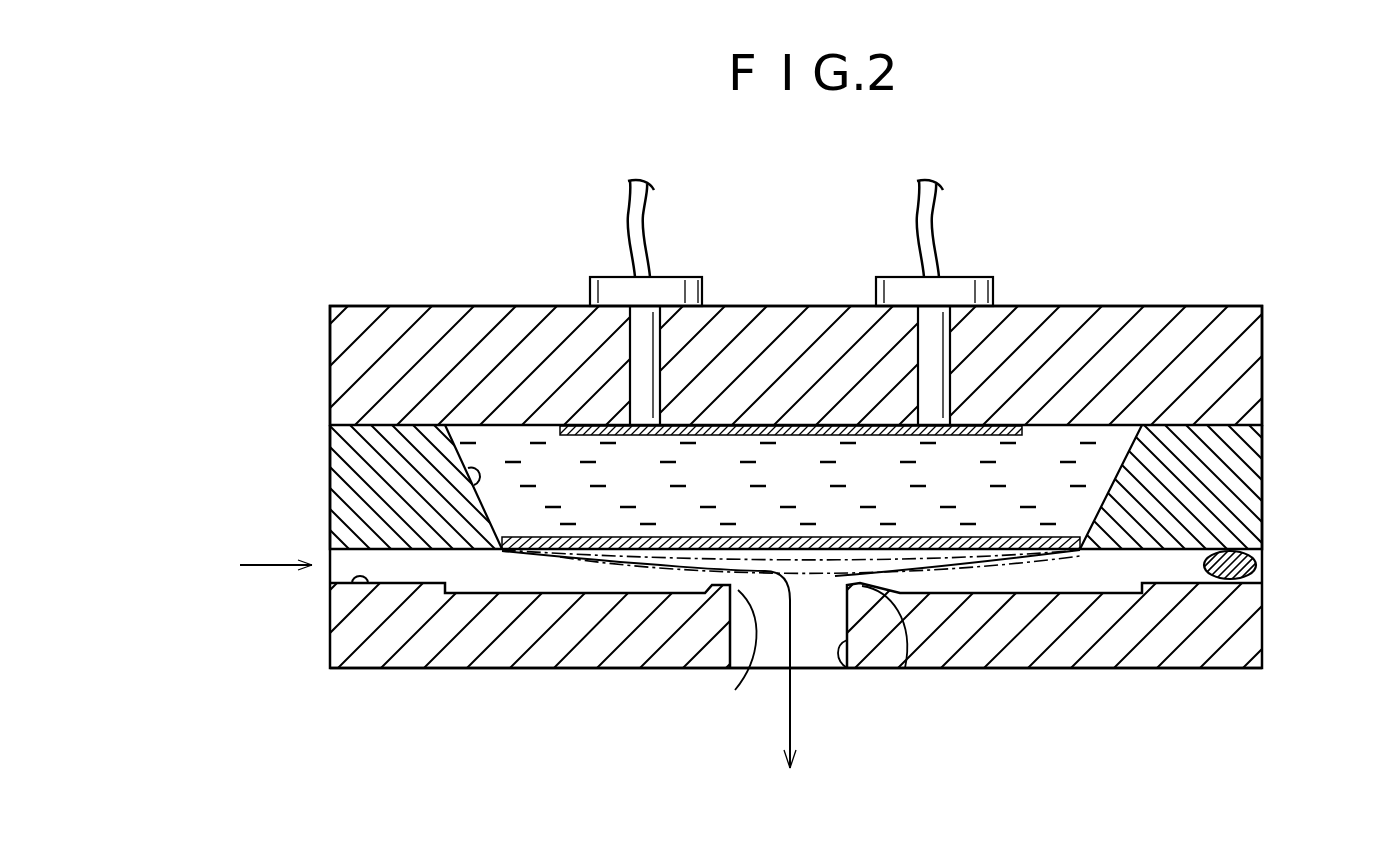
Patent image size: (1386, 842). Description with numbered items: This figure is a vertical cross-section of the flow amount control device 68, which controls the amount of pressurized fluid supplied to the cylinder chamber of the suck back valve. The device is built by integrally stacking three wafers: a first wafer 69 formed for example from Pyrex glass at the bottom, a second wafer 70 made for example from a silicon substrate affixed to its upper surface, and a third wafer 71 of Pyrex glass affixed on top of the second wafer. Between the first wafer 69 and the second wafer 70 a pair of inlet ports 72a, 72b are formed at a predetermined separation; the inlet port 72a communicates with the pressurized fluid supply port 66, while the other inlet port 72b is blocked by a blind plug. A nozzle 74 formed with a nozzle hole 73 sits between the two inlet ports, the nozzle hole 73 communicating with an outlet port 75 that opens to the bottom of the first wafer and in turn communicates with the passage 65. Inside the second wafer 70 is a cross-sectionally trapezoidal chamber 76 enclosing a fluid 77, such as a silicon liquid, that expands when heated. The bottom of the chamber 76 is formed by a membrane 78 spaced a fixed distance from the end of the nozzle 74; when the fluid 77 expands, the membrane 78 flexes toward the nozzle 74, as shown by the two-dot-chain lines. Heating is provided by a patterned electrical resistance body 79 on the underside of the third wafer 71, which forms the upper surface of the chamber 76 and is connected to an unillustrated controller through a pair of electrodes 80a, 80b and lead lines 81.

The passage 65 is at (853, 808).
The pressurized fluid supply port 66 is at (212, 614).
The flow amount control device 68 is at (1212, 295).
The first wafer 69 is at (1160, 650).
The second wafer 70 is at (1262, 487).
The third wafer 71 is at (1262, 377).
The inlet port 72a is at (330, 597).
The inlet port 72b is at (1243, 578).
The nozzle hole 73 is at (735, 680).
The nozzle 74 is at (910, 668).
The outlet port 75 is at (838, 675).
The chamber 76 is at (468, 470).
The fluid 77 is at (1057, 467).
The membrane 78 is at (790, 545).
The electrical resistance body 79 is at (722, 430).
The electrode 80a is at (637, 357).
The electrode 80b is at (940, 387).
The lead lines 81 is at (640, 215).